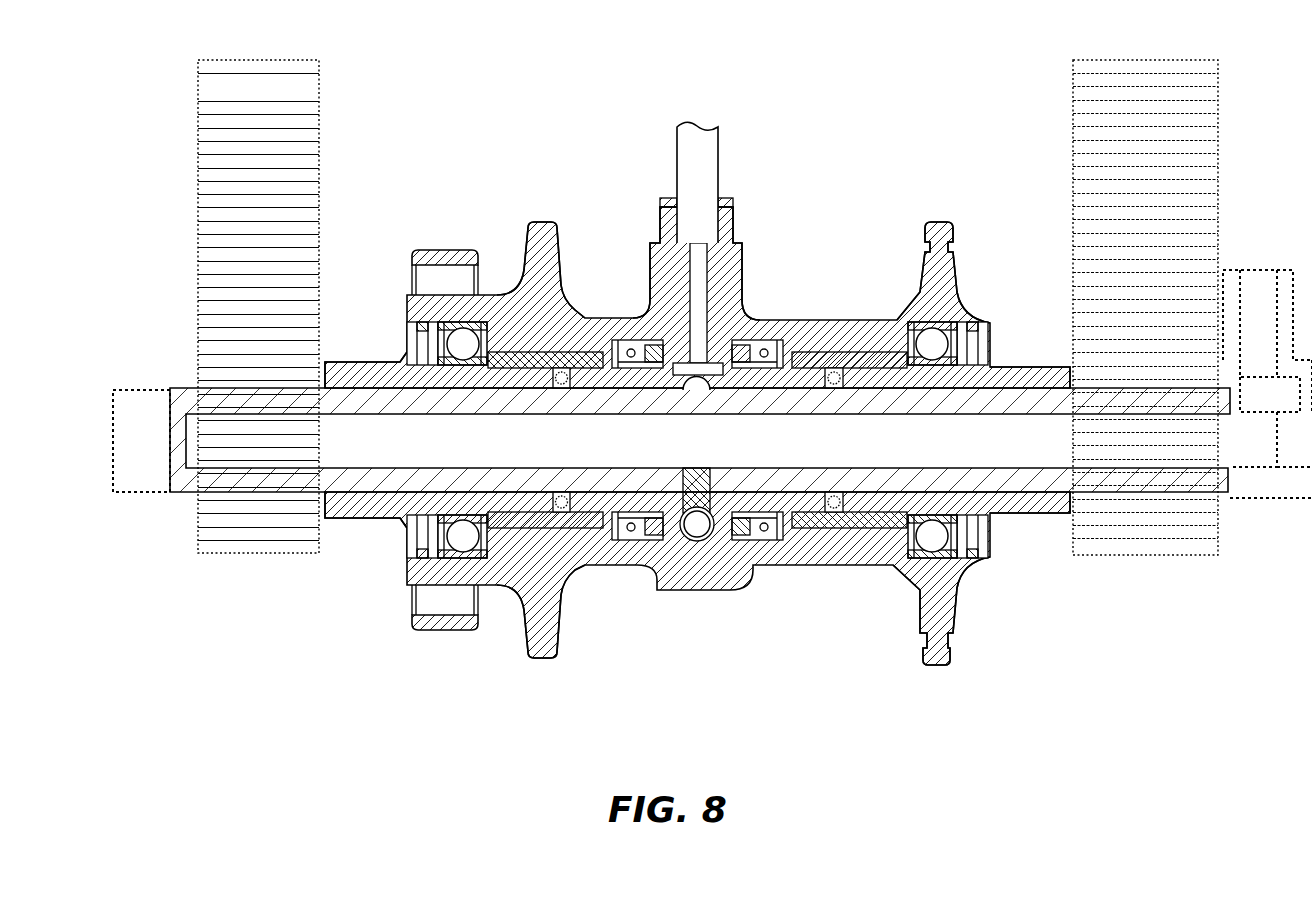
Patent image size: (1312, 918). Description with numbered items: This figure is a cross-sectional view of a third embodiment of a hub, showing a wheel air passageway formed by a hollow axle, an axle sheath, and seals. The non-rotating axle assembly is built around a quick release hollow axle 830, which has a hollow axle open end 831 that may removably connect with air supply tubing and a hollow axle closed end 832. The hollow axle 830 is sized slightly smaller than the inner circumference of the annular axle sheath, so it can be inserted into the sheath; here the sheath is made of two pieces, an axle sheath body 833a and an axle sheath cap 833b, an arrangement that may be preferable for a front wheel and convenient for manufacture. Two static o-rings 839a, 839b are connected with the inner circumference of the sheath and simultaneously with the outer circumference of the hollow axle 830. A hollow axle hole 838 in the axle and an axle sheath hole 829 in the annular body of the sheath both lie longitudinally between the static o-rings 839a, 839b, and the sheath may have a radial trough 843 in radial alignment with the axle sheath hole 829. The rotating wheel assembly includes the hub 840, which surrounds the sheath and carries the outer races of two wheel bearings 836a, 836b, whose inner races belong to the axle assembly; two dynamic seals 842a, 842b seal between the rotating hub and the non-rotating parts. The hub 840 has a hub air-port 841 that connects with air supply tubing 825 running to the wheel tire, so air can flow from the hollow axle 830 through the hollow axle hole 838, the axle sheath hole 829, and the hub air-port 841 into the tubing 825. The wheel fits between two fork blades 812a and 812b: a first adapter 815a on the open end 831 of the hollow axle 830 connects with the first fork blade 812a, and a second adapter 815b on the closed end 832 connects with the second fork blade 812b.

The first fork blade 812a is at (320, 168).
The second fork blade 812b is at (1073, 146).
The first adapter 815a is at (363, 373).
The second adapter 815b is at (1008, 375).
The air supply tubing 825 is at (718, 156).
The axle sheath hole 829 is at (693, 545).
The hollow axle 830 is at (947, 412).
The hollow axle open end 831 is at (1267, 384).
The hollow axle closed end 832 is at (170, 447).
The axle sheath body 833a is at (833, 366).
The axle sheath cap 833b is at (592, 330).
The first wheel bearing 836a is at (445, 343).
The second wheel bearing 836b is at (980, 332).
The hollow axle hole 838 is at (688, 505).
The first static o-ring 839a is at (522, 298).
The second static o-ring 839b is at (870, 320).
The hub 840 is at (965, 297).
The hub air-port 841 is at (742, 260).
The first dynamic seal 842a is at (630, 345).
The second dynamic seal 842b is at (768, 343).
The radial trough 843 is at (743, 280).